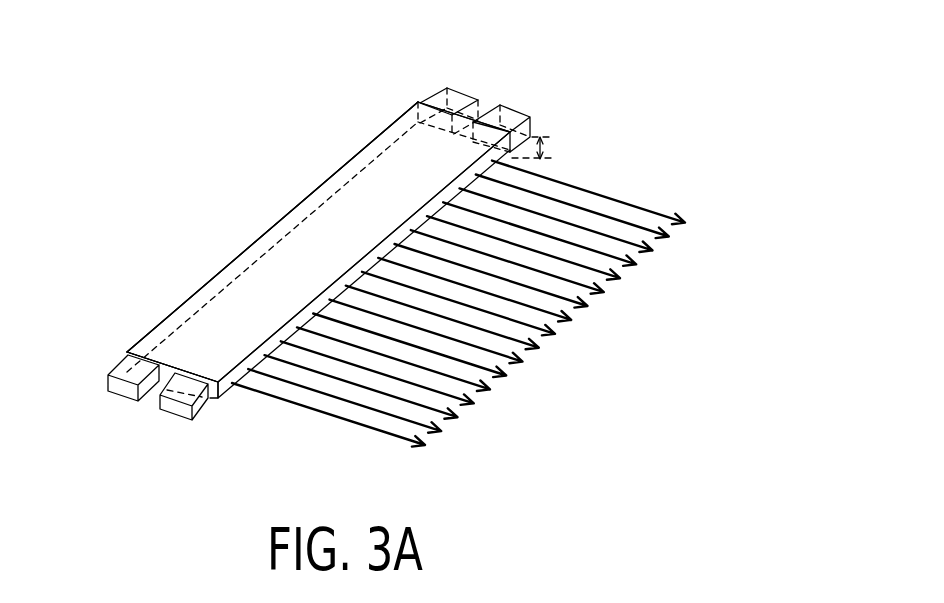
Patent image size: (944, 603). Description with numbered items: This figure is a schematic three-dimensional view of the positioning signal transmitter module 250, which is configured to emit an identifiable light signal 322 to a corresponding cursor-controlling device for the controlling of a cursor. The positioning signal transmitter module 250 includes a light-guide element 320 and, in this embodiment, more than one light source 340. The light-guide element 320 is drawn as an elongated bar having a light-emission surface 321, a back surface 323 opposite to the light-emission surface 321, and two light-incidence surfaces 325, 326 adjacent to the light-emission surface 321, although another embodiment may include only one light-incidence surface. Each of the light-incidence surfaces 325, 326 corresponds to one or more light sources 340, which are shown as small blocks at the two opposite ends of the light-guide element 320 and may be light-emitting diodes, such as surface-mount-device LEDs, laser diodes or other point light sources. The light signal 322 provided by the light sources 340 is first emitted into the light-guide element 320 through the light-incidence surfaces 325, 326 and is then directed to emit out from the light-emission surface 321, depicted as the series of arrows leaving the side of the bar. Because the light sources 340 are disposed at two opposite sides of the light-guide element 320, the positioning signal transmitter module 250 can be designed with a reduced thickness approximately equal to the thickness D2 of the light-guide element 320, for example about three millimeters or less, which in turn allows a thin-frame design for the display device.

The positioning signal transmitter module 250 is at (95, 138).
The light-guide element 320 is at (292, 253).
The back surface 323 is at (338, 169).
The light-emission surface 321 is at (228, 394).
The light source 340 is at (107, 388).
The light-incidence surface 326 is at (171, 374).
The light-incidence surface 325 is at (478, 117).
The thickness D2 is at (546, 154).
The light signal 322 is at (645, 207).